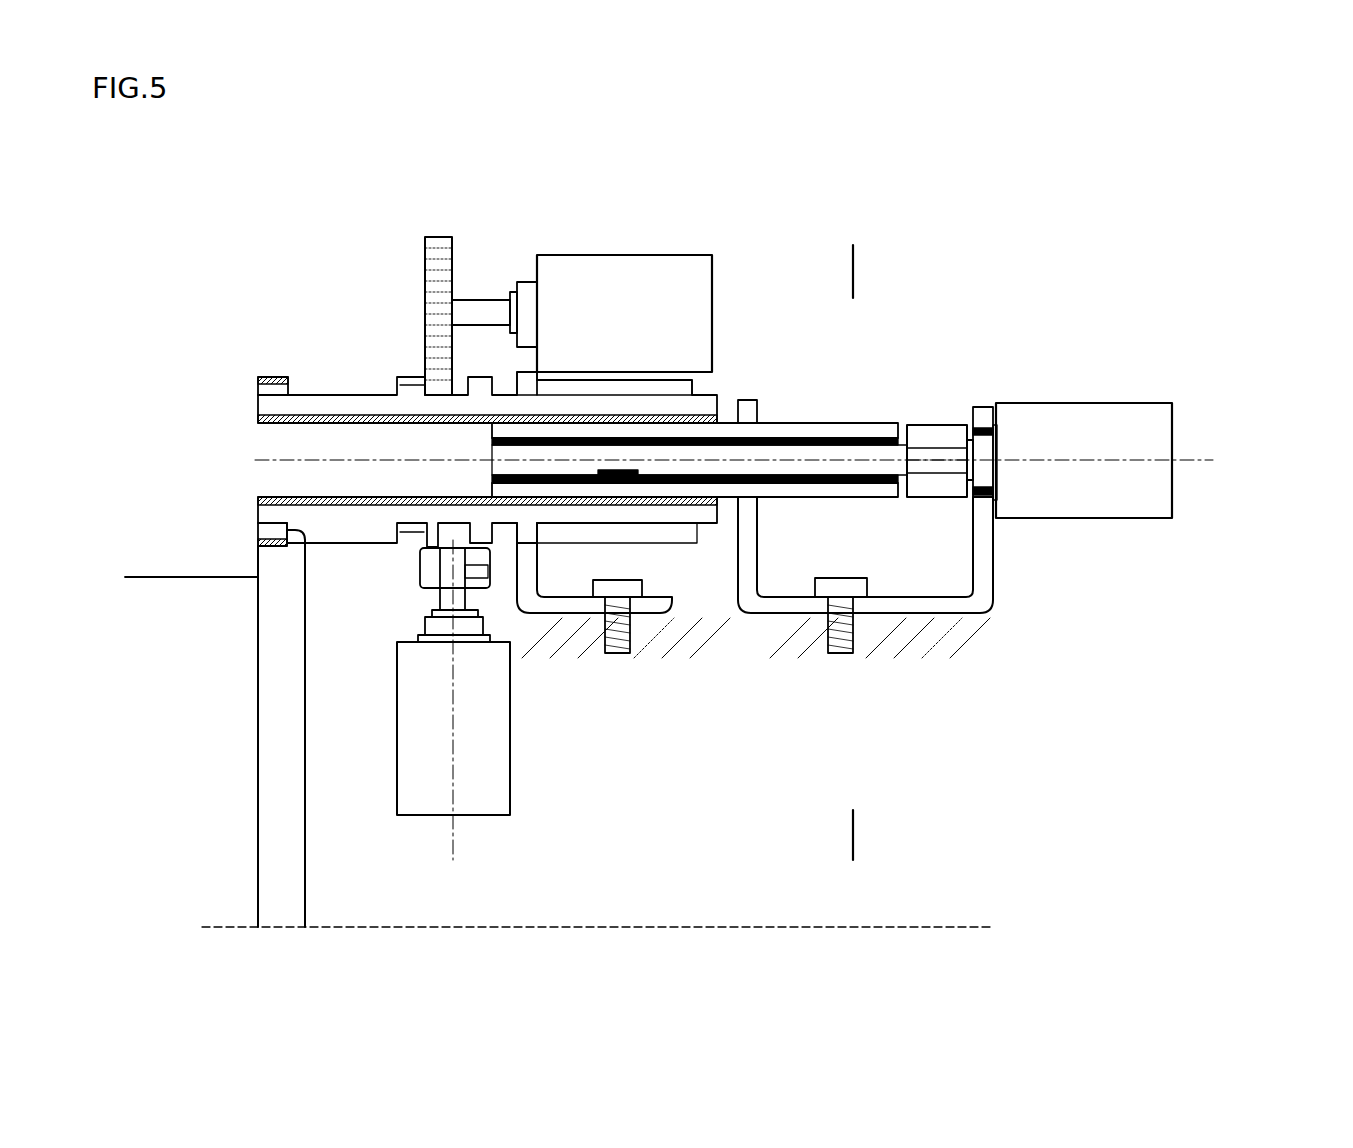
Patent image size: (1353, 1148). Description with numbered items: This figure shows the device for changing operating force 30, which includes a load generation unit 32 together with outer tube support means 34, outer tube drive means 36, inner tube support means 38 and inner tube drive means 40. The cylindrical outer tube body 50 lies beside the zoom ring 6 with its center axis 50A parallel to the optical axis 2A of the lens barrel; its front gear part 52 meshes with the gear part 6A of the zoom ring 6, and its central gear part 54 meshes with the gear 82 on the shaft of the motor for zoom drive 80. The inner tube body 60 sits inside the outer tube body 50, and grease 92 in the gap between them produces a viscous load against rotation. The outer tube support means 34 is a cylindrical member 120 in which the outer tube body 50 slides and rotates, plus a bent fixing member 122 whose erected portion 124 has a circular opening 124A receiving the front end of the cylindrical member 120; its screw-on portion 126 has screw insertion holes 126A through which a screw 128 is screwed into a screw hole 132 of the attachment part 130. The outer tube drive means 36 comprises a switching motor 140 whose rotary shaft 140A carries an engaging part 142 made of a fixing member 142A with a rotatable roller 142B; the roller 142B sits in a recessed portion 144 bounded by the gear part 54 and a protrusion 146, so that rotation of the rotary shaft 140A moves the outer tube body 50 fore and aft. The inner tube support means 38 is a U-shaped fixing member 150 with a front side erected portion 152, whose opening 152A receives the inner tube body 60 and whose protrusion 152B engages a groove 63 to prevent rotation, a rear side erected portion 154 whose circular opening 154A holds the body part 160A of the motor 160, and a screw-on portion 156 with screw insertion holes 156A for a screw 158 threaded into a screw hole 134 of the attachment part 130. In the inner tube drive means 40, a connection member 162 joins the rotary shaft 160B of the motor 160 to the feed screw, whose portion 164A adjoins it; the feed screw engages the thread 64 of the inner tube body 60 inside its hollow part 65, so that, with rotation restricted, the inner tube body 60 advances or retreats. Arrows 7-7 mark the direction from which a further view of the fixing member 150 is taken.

The optical axis 2A is at (596, 913).
The zoom ring 6 is at (163, 590).
The gear part of zoom ring 6A is at (275, 566).
The arrows 7- 7 is at (860, 248).
The device for changing operating force 30 is at (224, 217).
The load generation unit 32 is at (173, 405).
The outer tube support means 34 is at (618, 773).
The outer tube drive means 36 is at (402, 835).
The inner tube support means 38 is at (842, 773).
The inner tube drive means 40 is at (1213, 488).
The outer tube body 50 is at (337, 397).
The center axis of outer tube body 50A is at (734, 447).
The gear part 52 is at (273, 384).
The gear part 54 is at (413, 383).
The inner tube body 60 is at (877, 457).
The groove 63 is at (905, 497).
The thread 64 is at (700, 445).
The hollow part 65 is at (618, 467).
The motor for zoom drive 80 is at (651, 272).
The gear 82 is at (437, 237).
The grease 92 is at (275, 498).
The cylindrical member 120 is at (660, 387).
The fixing member 122 is at (527, 620).
The erected portion 124 is at (527, 560).
The circular opening 124A is at (590, 540).
The screw-on portion 126 is at (660, 614).
The screw insertion hole 126A is at (612, 690).
The screw 128 is at (690, 593).
The attachment part 130 is at (588, 649).
The screw hole 132 is at (612, 658).
The screw hole 134 is at (830, 655).
The switching motor 140 is at (412, 783).
The rotary shaft 140A is at (415, 690).
The engaging part 142 is at (430, 636).
The fixing member 142A is at (412, 598).
The roller 142B is at (398, 533).
The recessed portion 144 is at (440, 535).
The protrusion 146 is at (495, 560).
The fixing member 150 is at (928, 615).
The front side erected portion 152 is at (757, 507).
The opening 152A is at (760, 443).
The protrusion 152B is at (757, 412).
The rear side erected portion 154 is at (983, 532).
The circular opening 154A is at (1000, 457).
The screw-on portion 156 is at (967, 620).
The screw insertion hole 156A is at (836, 690).
The screw 158 is at (870, 583).
The motor 160 is at (1130, 418).
The body part 160A is at (1090, 405).
The rotary shaft 160B is at (1000, 465).
The connection member 162 is at (935, 440).
The coupling pin 164A is at (893, 450).